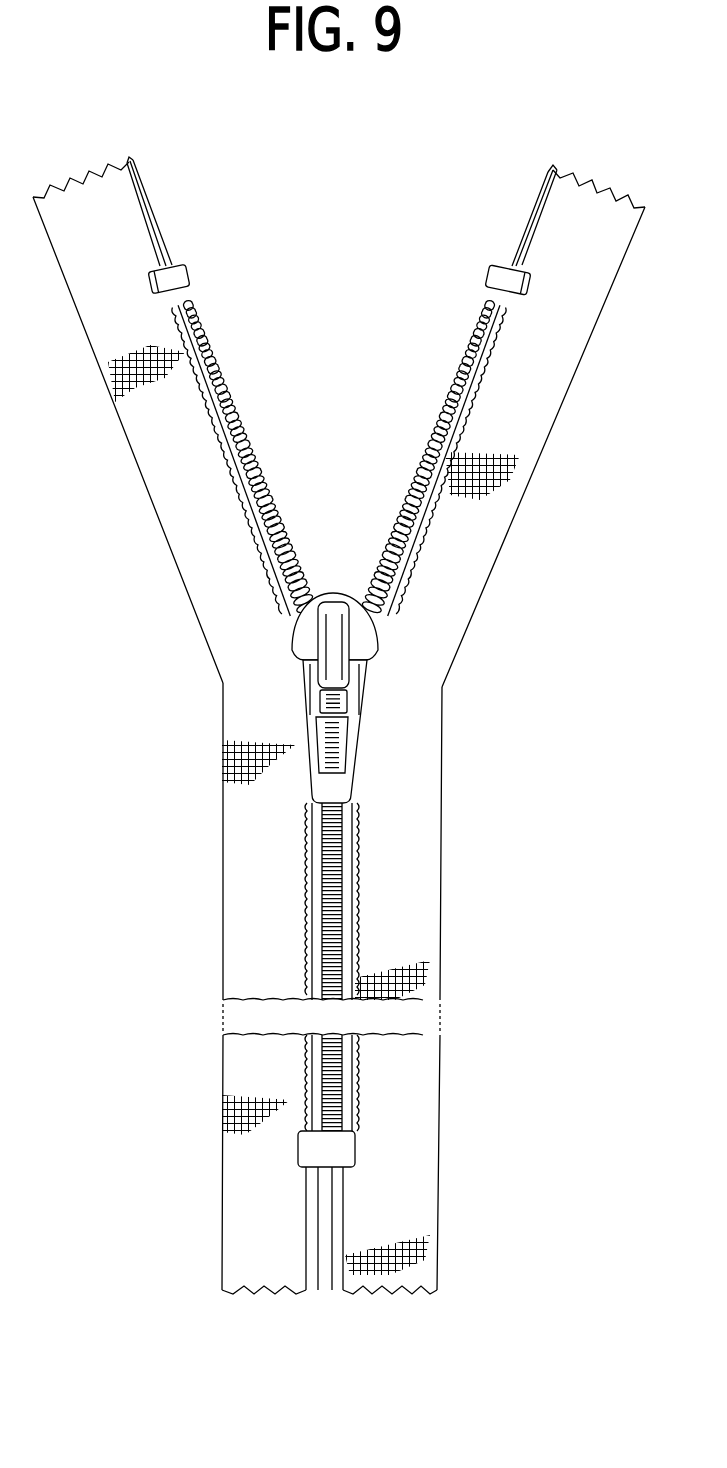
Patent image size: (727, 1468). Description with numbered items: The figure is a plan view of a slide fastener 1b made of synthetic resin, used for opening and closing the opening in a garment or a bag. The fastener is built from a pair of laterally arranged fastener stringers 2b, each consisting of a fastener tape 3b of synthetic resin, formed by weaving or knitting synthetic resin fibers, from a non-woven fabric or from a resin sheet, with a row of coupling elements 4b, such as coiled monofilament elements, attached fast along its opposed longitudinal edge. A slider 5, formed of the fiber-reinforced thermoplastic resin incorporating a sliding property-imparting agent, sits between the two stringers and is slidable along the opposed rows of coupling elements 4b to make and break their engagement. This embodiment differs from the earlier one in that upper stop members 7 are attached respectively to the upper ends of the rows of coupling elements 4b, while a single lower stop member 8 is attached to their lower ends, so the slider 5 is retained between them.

The slide fastener 1b is at (466, 653).
The fastener stringers 2b is at (82, 175).
The fastener tapes 3b is at (230, 877).
The rows of coupling elements 4b is at (415, 430).
The slider 5 is at (364, 707).
The upper stop members 7 is at (186, 280).
The lower stop member 8 is at (345, 1148).